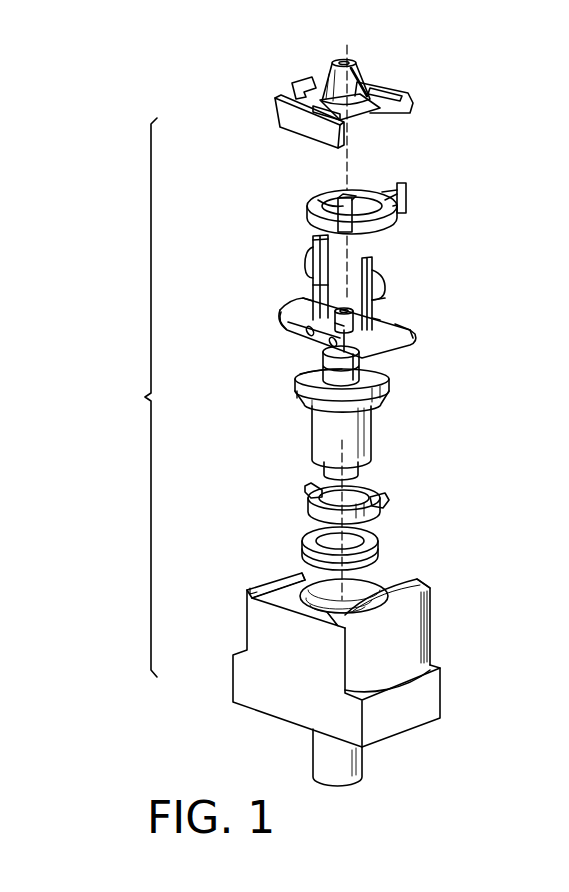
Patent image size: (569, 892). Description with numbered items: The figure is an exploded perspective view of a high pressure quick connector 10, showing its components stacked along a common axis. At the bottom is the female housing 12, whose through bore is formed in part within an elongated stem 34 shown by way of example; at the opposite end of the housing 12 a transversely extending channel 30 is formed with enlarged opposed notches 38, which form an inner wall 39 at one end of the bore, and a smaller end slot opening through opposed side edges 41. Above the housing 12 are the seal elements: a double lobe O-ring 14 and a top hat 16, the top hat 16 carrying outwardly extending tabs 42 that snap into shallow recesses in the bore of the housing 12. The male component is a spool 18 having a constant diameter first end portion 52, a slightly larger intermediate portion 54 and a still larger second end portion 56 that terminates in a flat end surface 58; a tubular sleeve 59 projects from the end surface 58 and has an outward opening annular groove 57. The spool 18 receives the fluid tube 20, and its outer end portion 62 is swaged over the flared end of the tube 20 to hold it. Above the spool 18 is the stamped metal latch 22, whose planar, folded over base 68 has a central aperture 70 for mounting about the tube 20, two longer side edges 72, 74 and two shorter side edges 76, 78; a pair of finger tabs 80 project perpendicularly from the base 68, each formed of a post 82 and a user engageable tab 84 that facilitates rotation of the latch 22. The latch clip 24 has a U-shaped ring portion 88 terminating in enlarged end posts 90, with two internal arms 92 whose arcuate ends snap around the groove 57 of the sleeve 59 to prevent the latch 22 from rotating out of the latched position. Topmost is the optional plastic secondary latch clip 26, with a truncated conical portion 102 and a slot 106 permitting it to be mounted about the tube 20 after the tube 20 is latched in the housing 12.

The quick connector 10 is at (132, 397).
The housing 12 is at (442, 625).
The O-ring 14 is at (380, 547).
The top hat 16 is at (384, 492).
The spool 18 is at (452, 427).
The fluid conduit or tube 20 is at (402, 326).
The latch 22 is at (420, 340).
The latch clip 24 is at (534, 158).
The secondary latch clip 26 is at (475, 84).
The channel 30 is at (256, 597).
The elongated stem 34 is at (350, 762).
The notches 38 is at (249, 590).
The inner wall 39 is at (293, 605).
The side edges 41 is at (298, 572).
The tabs 42 is at (308, 490).
The first end portion 52 is at (374, 438).
The intermediate portion 54 is at (388, 396).
The second end portion 56 is at (299, 396).
The annular groove 57 is at (362, 370).
The end surface 58 is at (299, 375).
The tubular sleeve 59 is at (322, 360).
The outer end portion 62 is at (362, 472).
The base 68 is at (330, 316).
The central aperture 70 is at (345, 328).
The major dimension side edge 72 is at (281, 336).
The major dimension side edge 74 is at (380, 312).
The minor dimension side edge 76 is at (300, 304).
The minor dimension side edge 78 is at (358, 348).
The finger tabs 80 is at (312, 240).
The post 82 is at (310, 290).
The user engageable tab 84 is at (310, 239).
The U-shaped ring portion 88 is at (356, 190).
The end posts 90 is at (336, 205).
The arms 92 is at (402, 221).
The truncated conical portion 102 is at (328, 74).
The slot 106 is at (370, 83).